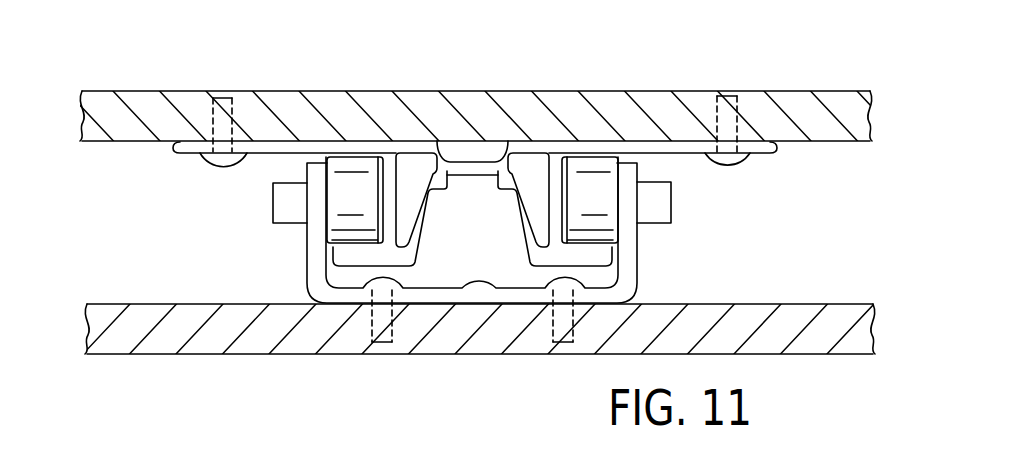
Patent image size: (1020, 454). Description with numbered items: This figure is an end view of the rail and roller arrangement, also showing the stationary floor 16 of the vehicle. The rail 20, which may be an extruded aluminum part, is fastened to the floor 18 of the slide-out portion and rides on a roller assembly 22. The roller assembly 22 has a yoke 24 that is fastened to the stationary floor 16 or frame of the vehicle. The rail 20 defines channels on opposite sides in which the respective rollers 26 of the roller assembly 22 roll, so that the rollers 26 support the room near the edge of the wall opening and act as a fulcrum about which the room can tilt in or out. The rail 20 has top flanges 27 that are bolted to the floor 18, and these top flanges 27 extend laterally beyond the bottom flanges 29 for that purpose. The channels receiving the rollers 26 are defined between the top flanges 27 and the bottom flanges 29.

The stationary floor 16 is at (845, 303).
The floor 18 is at (827, 91).
The rail 20 is at (258, 158).
The roller assembly 22 is at (665, 264).
The yoke 24 is at (487, 276).
The rollers 26 is at (352, 178).
The top flanges 27 is at (178, 153).
The bottom flanges 29 is at (540, 257).